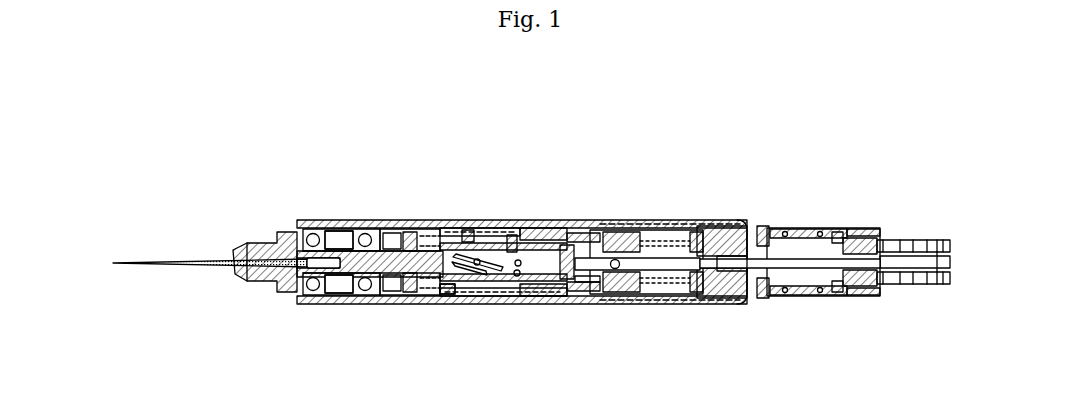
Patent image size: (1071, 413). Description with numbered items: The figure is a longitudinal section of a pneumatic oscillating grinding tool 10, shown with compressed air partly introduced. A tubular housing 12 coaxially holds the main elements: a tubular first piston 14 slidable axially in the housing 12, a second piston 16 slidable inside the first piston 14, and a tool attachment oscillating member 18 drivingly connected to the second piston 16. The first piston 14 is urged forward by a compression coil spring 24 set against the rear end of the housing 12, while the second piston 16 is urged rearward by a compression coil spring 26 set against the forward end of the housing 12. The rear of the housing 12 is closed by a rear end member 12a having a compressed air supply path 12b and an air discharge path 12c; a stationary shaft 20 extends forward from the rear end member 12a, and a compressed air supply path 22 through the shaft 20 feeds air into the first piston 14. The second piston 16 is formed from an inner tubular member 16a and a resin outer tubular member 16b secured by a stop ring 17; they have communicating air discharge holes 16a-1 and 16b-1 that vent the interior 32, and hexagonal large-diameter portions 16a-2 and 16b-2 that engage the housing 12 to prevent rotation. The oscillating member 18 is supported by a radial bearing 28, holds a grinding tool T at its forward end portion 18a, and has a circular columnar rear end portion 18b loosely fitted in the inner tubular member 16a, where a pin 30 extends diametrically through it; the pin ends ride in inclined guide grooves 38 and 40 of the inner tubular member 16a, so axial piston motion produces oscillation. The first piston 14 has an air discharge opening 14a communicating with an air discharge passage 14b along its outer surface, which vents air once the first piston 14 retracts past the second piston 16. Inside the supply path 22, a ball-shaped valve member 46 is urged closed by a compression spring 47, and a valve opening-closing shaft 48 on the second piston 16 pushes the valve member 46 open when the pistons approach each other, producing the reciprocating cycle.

The oscillating grinding tool 10 is at (571, 136).
The tubular housing 12 is at (597, 220).
The rear end member 12a is at (745, 220).
The compressed air supply path 12b is at (800, 229).
The air discharge path 12c is at (762, 299).
The first piston 14 is at (638, 230).
The air discharge opening 14a is at (541, 228).
The air discharge passage 14b is at (576, 233).
The second piston 16 is at (508, 243).
The inner tubular member 16a is at (545, 296).
The air discharge hole 16a-1 is at (505, 272).
The large-diameter portion 16a-2 is at (430, 296).
The outer tubular member 16b is at (490, 228).
The air discharge hole 16b-1 is at (523, 235).
The large-diameter portion 16b-2 is at (466, 230).
The stop ring 17 is at (586, 296).
The tool attachment oscillating member 18 is at (397, 229).
The forward end portion 18a is at (263, 282).
The rear end portion 18b is at (442, 232).
The stationary shaft 20 is at (665, 296).
The compressed air supply path 22 is at (684, 220).
The compression coil spring 24 is at (677, 312).
The compression coil spring 26 is at (395, 296).
The radial bearing 28 is at (367, 220).
The pin 30 is at (475, 266).
The interior 32 is at (520, 266).
The guide groove 38 is at (445, 296).
The guide groove 40 is at (447, 289).
The valve member 46 is at (597, 296).
The compression spring 47 is at (613, 296).
The valve opening-closing shaft 48 is at (623, 222).
The grinding tool T is at (182, 258).